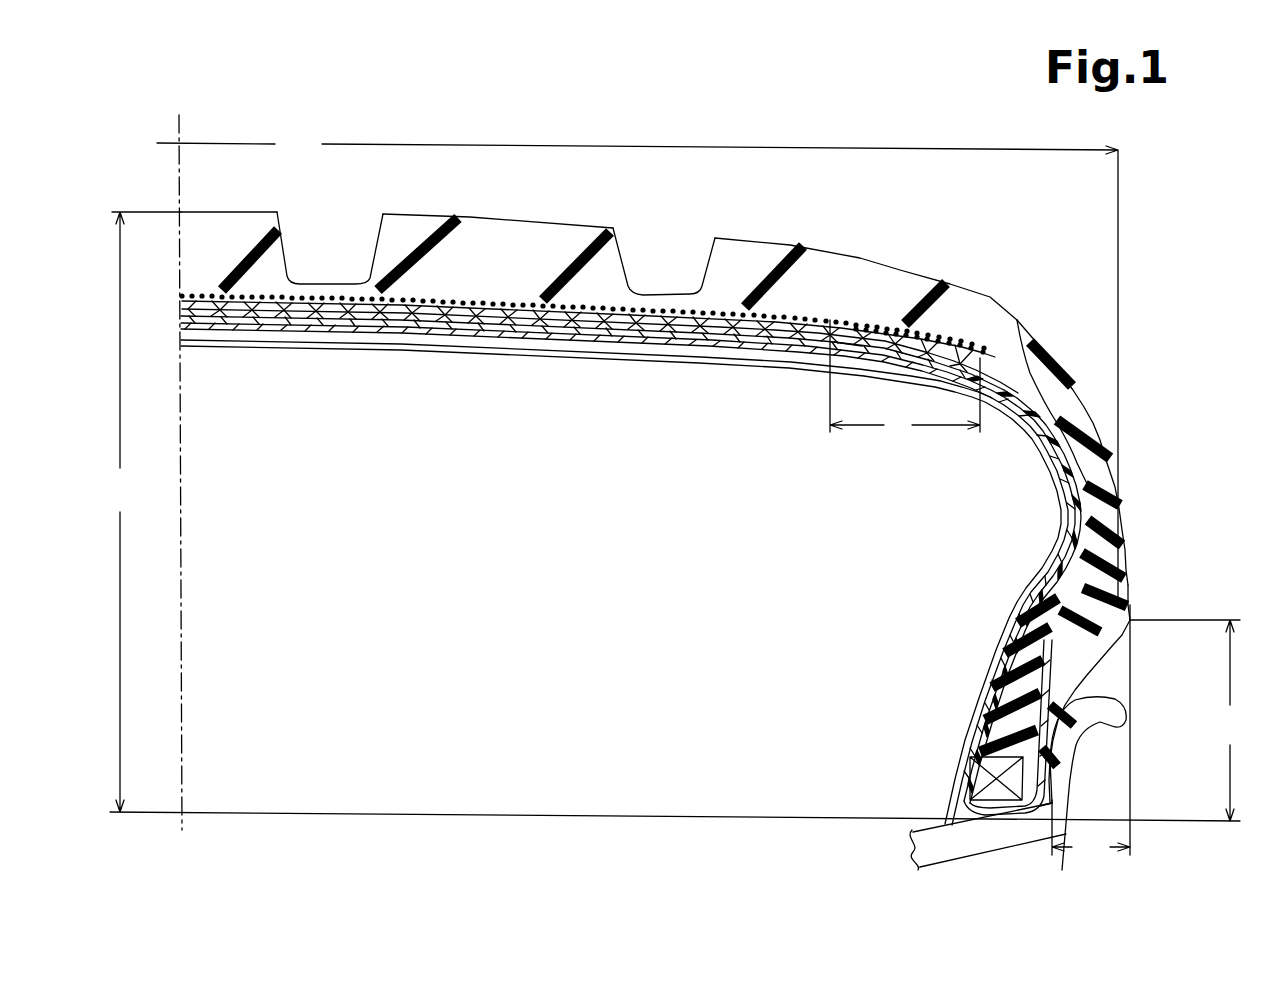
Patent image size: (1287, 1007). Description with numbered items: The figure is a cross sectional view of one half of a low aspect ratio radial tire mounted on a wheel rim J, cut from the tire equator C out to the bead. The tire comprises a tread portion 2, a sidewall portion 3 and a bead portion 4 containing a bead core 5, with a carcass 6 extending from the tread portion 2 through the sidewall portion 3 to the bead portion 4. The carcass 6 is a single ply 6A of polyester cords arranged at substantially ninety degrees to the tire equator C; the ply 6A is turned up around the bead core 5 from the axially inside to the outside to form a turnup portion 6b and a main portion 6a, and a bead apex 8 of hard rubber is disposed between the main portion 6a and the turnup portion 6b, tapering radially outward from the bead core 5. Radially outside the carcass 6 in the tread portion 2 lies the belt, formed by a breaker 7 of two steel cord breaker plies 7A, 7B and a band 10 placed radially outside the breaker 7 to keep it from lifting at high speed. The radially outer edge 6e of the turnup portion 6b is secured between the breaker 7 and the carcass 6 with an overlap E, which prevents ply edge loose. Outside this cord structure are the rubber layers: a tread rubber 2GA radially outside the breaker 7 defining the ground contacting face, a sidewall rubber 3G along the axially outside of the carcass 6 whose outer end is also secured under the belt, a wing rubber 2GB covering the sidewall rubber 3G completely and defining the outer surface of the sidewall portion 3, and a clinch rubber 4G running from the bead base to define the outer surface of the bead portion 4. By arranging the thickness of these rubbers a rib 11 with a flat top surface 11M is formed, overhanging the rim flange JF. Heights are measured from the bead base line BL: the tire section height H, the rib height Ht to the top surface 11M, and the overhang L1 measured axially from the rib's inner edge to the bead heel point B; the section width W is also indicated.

The tread portion 2 is at (788, 217).
The tread rubber 2GA is at (920, 288).
The wing rubber 2GB is at (1075, 407).
The sidewall portion 3 is at (1140, 411).
The sidewall rubber 3G is at (1087, 497).
The bead portion 4 is at (1125, 670).
The clinch rubber 4G is at (1073, 660).
The bead core 5 is at (975, 775).
The carcass 6 is at (624, 582).
The carcass ply 6A is at (634, 508).
The main portion 6a is at (1050, 462).
The turnup portion 6b is at (1088, 493).
The radially outer edge 6e is at (830, 327).
The breaker 7 is at (599, 388).
The breaker ply 7A is at (508, 323).
The breaker ply 7B is at (485, 413).
The bead apex 8 is at (1010, 668).
The band 10 is at (461, 286).
The rib 11 is at (1132, 575).
The rib top surface 11M is at (1132, 608).
The bead heel point B is at (1047, 805).
The wheel rim J is at (973, 845).
The rim flange JF is at (1105, 767).
The bead base line BL is at (640, 800).
The tire equator C is at (175, 460).
The tire section width W is at (637, 364).
The tire section height H is at (144, 512).
The radial height Ht is at (1186, 730).
The overhang L1 is at (1091, 831).
The overlap E is at (905, 381).